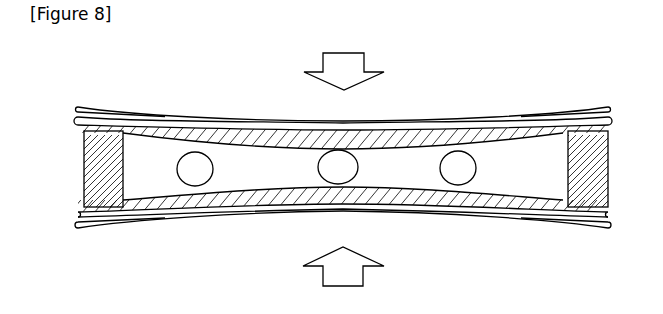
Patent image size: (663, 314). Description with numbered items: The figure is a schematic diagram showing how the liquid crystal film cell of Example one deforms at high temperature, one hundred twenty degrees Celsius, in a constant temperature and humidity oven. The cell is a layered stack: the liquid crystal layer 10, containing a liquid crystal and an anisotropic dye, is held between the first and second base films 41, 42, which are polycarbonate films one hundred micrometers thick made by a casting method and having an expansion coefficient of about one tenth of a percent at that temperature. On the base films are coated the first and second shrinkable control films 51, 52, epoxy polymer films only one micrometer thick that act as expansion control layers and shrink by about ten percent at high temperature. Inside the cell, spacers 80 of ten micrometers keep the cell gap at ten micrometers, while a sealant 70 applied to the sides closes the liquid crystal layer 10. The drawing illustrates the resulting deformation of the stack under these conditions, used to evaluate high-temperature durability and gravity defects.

The liquid crystal layer 10 is at (522, 165).
The first base film 41 is at (607, 110).
The second base film 42 is at (614, 226).
The first shrinkable control film 51 is at (573, 118).
The second shrinkable control film 52 is at (573, 221).
The sealant 70 is at (92, 162).
The spacer 80 is at (200, 166).